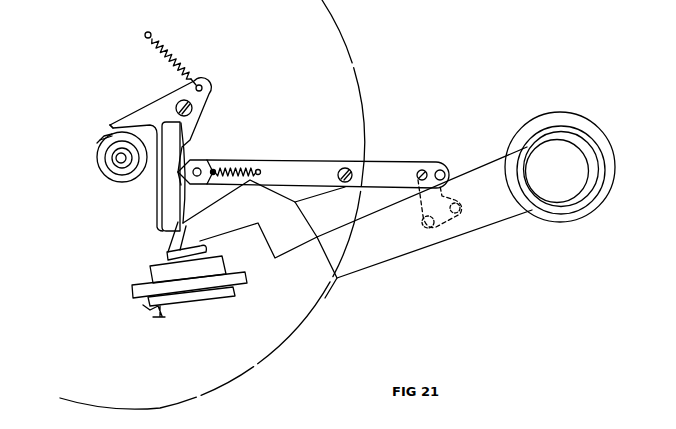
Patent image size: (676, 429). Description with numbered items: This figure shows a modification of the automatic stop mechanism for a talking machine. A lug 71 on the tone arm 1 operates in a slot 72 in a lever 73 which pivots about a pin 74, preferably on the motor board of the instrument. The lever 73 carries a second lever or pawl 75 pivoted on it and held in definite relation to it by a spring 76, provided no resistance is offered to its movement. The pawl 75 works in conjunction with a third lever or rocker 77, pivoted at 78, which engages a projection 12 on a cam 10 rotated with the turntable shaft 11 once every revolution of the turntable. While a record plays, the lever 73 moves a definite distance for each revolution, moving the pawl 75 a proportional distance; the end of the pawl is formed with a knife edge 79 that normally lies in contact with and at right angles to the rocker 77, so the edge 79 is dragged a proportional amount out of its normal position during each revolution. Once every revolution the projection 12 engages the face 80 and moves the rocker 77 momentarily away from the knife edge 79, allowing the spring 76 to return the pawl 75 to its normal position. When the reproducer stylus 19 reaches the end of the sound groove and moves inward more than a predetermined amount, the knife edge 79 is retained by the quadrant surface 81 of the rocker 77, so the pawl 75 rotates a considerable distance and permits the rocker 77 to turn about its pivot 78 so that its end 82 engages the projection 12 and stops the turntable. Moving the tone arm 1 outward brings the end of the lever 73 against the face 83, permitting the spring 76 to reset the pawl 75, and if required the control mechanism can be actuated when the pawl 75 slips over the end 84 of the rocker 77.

The tone arm 1 is at (415, 240).
The cam member 10 is at (115, 175).
The turntable shaft 11 is at (103, 158).
The cam projection 12 is at (120, 157).
The reproducer stylus 19 is at (143, 305).
The lug 71 is at (425, 168).
The slot 72 is at (445, 167).
The lever 73 is at (312, 165).
The pin 74 is at (347, 168).
The pawl 75 is at (207, 160).
The spring 76 is at (259, 168).
The rocker 77 is at (167, 212).
The pivot 78 is at (176, 103).
The knife edge 79 is at (185, 153).
The face 80 is at (123, 118).
The quadrant surface 81 is at (168, 240).
The end 82 is at (110, 125).
The face 83 is at (207, 93).
The end 84 is at (186, 226).